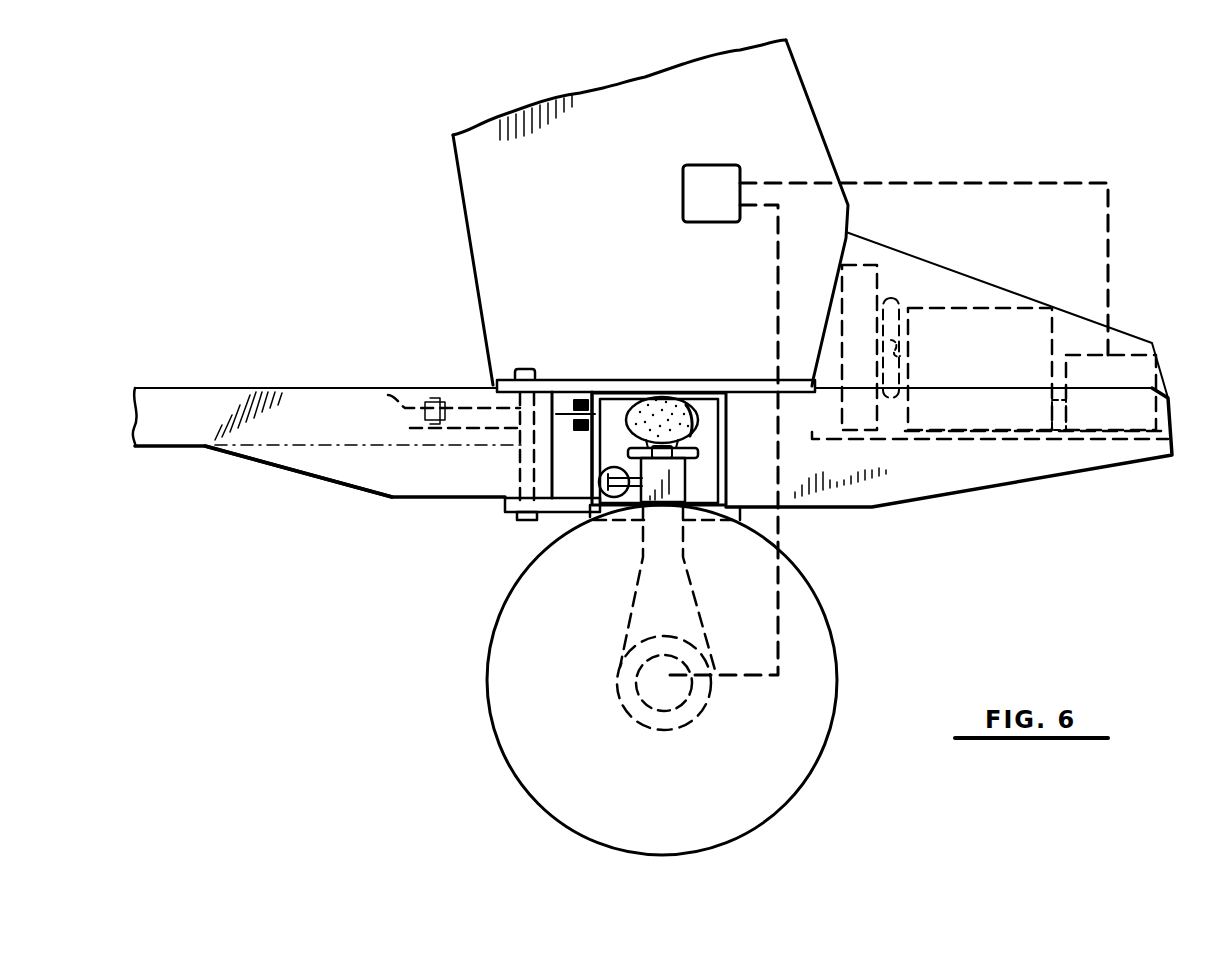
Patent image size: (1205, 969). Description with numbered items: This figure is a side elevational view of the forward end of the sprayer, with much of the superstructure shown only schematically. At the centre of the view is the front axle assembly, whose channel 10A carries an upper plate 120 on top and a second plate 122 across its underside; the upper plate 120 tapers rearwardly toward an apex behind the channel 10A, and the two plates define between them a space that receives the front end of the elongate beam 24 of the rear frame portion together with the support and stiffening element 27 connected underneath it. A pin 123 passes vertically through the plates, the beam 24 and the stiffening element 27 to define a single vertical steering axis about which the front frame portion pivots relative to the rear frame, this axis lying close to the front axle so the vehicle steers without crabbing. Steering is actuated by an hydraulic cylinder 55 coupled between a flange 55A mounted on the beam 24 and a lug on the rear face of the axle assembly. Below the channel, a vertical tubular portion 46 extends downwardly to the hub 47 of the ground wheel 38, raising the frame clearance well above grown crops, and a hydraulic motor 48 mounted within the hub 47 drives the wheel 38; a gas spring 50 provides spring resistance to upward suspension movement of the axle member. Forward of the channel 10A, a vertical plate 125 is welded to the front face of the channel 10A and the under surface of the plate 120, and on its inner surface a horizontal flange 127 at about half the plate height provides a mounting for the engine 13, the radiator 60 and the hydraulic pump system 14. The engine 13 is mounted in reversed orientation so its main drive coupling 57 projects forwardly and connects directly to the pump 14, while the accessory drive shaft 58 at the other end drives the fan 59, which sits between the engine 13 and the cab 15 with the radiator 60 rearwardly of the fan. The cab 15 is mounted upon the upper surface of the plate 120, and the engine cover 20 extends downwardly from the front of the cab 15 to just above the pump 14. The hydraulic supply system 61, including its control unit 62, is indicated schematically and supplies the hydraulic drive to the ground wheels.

The channel 10A is at (656, 363).
The engine 13 is at (990, 325).
The hydraulic pump system 14 is at (1122, 372).
The cab 15 is at (822, 112).
The engine cover 20 is at (972, 272).
The elongate beam 24 is at (172, 405).
The support and stiffening element 27 is at (342, 465).
The ground wheel 38 is at (487, 688).
The vertical tubular portion 46 is at (658, 545).
The hub 47 is at (624, 699).
The hydraulic motor 48 is at (660, 658).
The gas spring 50 is at (698, 412).
The hydraulic cylinder 55 is at (480, 398).
The flange 55A is at (398, 400).
The main drive coupling 57 is at (1050, 400).
The accessory drive shaft 58 is at (902, 350).
The fan 59 is at (890, 312).
The radiator 60 is at (876, 264).
The hydraulic supply system 61 is at (731, 152).
The control unit 62 is at (692, 183).
The upper plate 120 is at (564, 423).
The second plate 122 is at (562, 513).
The pin 123 is at (518, 368).
The vertical plate 125 is at (920, 478).
The horizontal flange 127 is at (1032, 440).